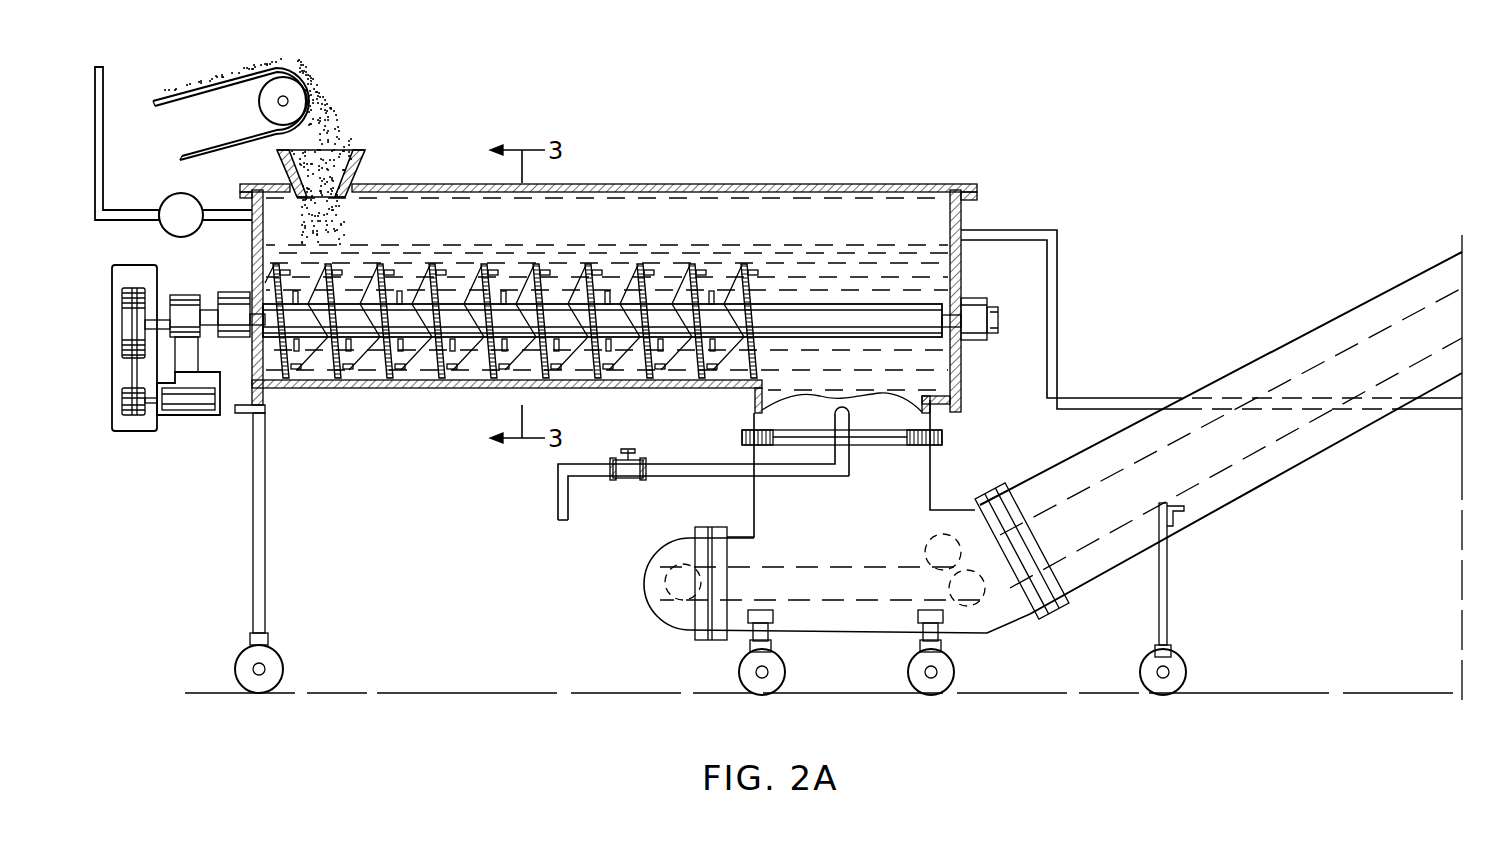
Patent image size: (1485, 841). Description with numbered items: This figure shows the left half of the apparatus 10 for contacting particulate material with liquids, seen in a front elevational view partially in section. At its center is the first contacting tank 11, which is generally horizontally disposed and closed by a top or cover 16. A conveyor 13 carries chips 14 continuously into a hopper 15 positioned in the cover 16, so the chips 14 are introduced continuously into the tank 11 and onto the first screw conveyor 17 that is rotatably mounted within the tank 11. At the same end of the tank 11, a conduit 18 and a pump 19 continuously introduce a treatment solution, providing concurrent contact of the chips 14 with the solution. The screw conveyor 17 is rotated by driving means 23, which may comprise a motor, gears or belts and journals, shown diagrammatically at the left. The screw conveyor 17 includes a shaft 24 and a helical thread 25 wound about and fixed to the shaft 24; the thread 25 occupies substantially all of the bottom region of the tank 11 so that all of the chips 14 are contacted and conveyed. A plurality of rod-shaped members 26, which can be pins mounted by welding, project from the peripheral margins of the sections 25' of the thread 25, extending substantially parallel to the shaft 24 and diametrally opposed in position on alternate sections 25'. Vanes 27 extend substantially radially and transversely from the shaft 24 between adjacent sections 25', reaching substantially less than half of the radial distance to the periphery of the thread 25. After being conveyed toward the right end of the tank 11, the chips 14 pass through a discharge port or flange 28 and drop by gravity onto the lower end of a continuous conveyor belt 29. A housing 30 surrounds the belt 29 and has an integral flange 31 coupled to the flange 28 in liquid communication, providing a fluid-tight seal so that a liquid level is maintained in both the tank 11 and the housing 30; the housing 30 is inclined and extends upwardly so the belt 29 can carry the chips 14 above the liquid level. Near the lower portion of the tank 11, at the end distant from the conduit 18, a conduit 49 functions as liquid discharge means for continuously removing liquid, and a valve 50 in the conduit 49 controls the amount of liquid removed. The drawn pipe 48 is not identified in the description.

The apparatus 10 is at (960, 182).
The first contacting tank 11 is at (576, 388).
The conveyor 13 is at (236, 92).
The chips 14 is at (327, 128).
The hopper 15 is at (364, 167).
The cover 16 is at (712, 184).
The first screw conveyor 17 is at (540, 272).
The conduit 18 is at (103, 156).
The pump 19 is at (197, 200).
The driving means 23 is at (193, 418).
The shaft 24 is at (398, 352).
The helical thread 25 is at (504, 416).
The sections of thread 25' is at (499, 384).
The rod-shaped members 26 is at (457, 390).
The vanes 27 is at (470, 372).
The flange 28 is at (938, 423).
The continuous conveyor belt 29 is at (1082, 565).
The housing 30 is at (1047, 468).
The flange 31 is at (932, 470).
The return pipe 48 is at (1060, 321).
The conduit 49 is at (557, 497).
The valve 50 is at (637, 447).